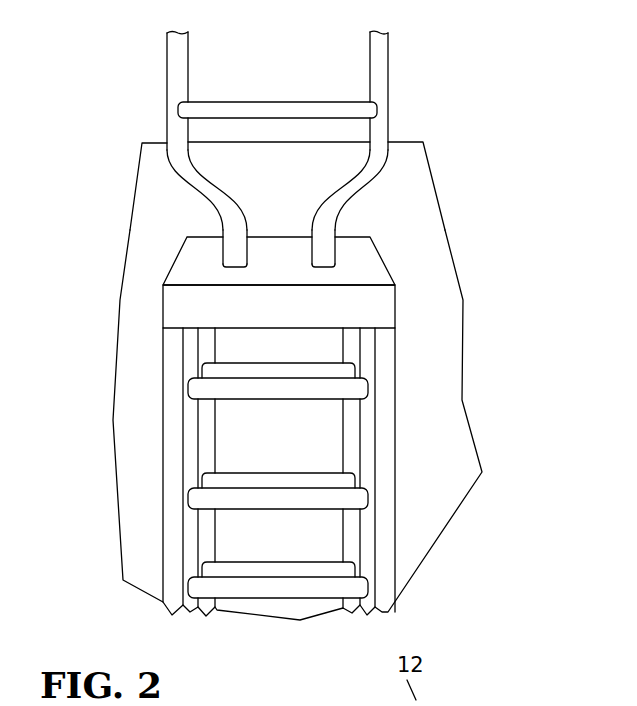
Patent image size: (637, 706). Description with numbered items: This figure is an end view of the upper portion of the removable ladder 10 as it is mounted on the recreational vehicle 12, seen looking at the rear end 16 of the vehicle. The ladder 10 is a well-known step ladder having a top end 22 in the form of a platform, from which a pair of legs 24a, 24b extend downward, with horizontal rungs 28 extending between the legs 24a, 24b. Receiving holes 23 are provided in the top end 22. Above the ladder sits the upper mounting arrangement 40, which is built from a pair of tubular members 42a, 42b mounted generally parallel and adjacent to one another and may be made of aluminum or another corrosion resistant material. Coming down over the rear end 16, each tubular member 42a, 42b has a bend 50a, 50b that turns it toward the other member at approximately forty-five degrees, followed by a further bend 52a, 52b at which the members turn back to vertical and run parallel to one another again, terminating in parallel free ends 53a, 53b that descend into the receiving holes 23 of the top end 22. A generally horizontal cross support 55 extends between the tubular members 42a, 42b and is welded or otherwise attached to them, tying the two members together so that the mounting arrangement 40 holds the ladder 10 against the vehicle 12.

The removable ladder 10 is at (468, 227).
The recreational vehicle 12 is at (136, 265).
The rear end 16 is at (150, 328).
The top end 22 is at (365, 275).
The receiving holes 23 is at (220, 250).
The leg 24a is at (172, 470).
The leg 24b is at (383, 475).
The horizontal rungs 28 is at (235, 387).
The upper mounting arrangement 40 is at (140, 77).
The tubular member 42a is at (176, 91).
The tubular member 42b is at (380, 67).
The bend 50a is at (182, 152).
The bend 50b is at (433, 150).
The bend 52a is at (232, 200).
The bend 52b is at (325, 193).
The free end 53a is at (235, 232).
The free end 53b is at (320, 258).
The horizontal cross support 55 is at (248, 110).